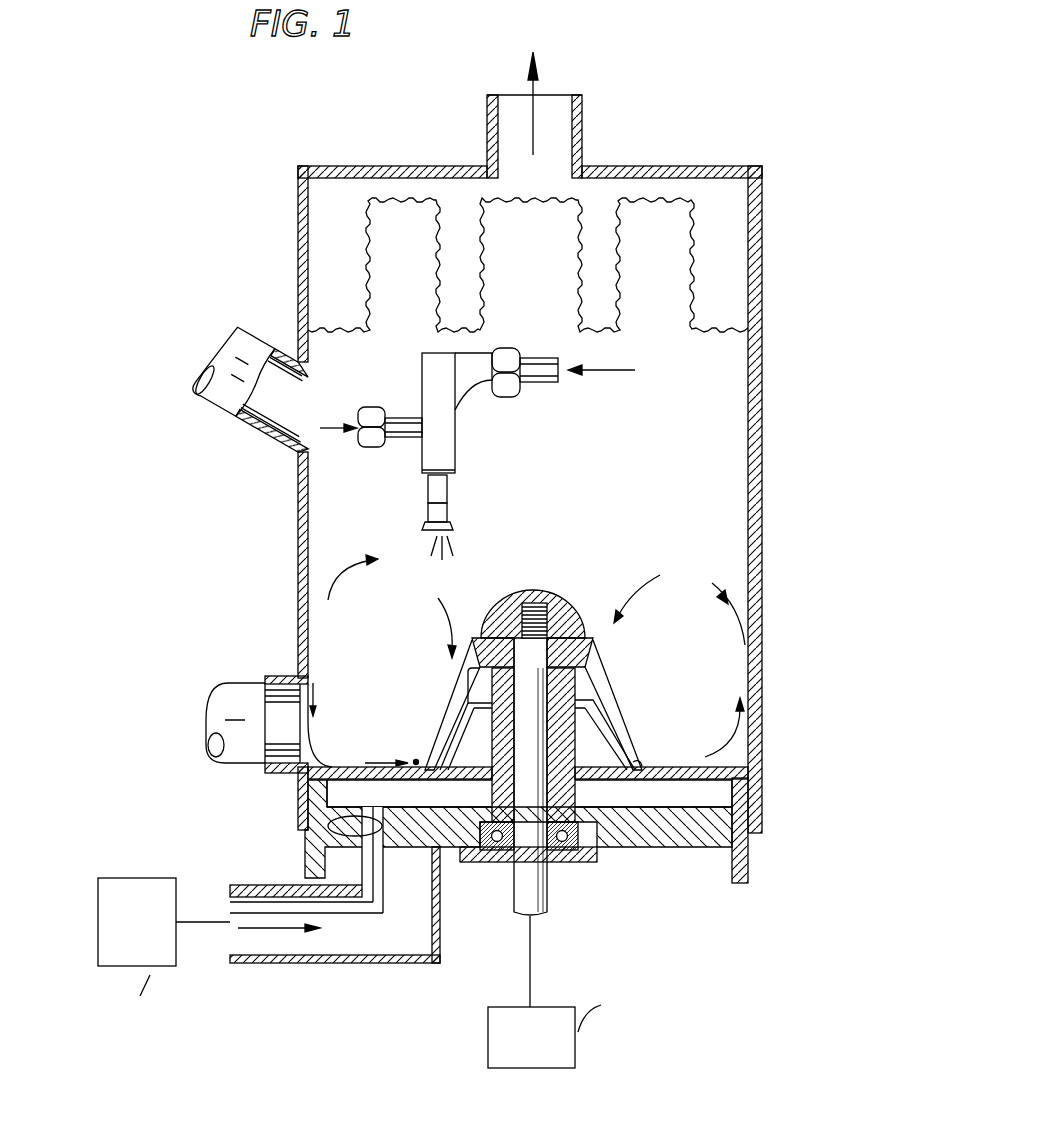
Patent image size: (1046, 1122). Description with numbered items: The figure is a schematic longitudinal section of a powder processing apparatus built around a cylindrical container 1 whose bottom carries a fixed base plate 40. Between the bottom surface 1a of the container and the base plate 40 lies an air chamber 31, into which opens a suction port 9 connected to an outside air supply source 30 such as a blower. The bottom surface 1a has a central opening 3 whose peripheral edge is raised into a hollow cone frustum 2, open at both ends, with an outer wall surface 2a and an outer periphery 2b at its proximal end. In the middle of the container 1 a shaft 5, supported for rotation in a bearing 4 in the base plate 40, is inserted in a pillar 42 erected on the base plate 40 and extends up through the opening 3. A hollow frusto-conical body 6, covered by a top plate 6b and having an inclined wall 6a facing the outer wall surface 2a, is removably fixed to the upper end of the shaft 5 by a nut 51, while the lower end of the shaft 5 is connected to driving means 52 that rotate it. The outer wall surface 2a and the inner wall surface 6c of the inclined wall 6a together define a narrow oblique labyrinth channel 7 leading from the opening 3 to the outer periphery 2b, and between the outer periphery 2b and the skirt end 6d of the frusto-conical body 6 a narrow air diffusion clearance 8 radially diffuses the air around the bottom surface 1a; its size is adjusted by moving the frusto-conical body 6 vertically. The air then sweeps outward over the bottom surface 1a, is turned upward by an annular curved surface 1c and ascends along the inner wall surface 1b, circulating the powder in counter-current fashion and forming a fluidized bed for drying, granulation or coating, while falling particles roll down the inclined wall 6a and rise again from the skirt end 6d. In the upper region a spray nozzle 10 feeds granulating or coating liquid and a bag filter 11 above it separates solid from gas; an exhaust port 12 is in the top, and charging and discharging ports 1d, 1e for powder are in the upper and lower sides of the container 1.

The cylindrical container 1 is at (757, 603).
The bottom surface 1a is at (718, 765).
The inner wall surface 1b is at (318, 528).
The annular curved surface 1c is at (326, 752).
The charging port 1d is at (238, 342).
The discharging port 1e is at (224, 690).
The cone frustum 2 is at (641, 725).
The outer wall surface 2a is at (632, 748).
The outer periphery 2b is at (420, 778).
The opening 3 is at (478, 757).
The air chamber 31 is at (398, 805).
The bearing 4 is at (601, 850).
The shaft 5 is at (536, 882).
The frusto-conical body 6 is at (604, 656).
The inclined wall 6a is at (612, 700).
The top plate 6b is at (567, 613).
The inner wall surface 6c is at (618, 723).
The skirt end 6d is at (425, 763).
The labyrinth channel 7 is at (467, 689).
The air diffusion clearance 8 is at (414, 761).
The air supply port 9 is at (330, 822).
The spray nozzle 10 is at (437, 493).
The bag filter 11 is at (578, 262).
The exhaust port 12 is at (552, 123).
The air supply source 30 is at (166, 878).
The base plate 40 is at (712, 838).
The pillar 42 is at (557, 773).
The nut 51 is at (514, 600).
The driving means 52 is at (553, 1007).